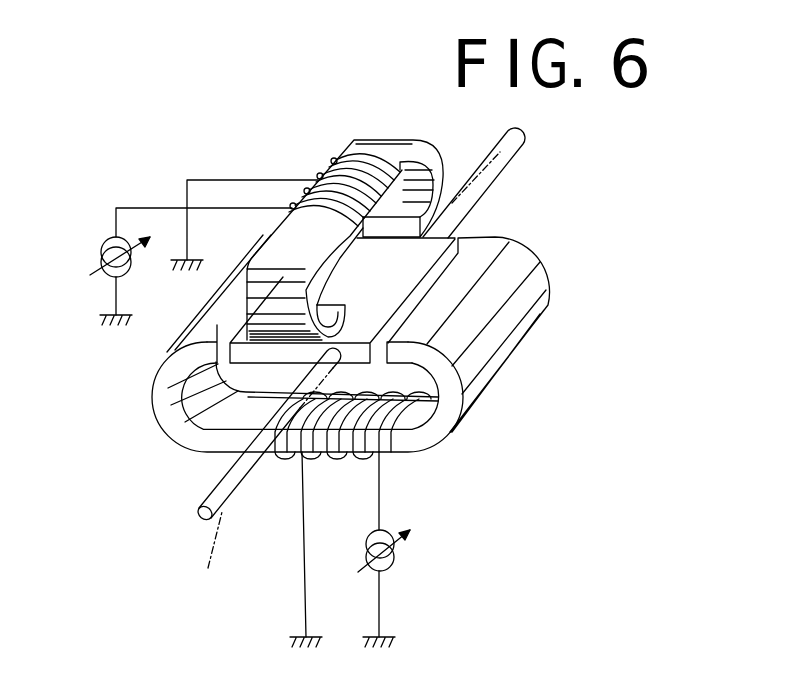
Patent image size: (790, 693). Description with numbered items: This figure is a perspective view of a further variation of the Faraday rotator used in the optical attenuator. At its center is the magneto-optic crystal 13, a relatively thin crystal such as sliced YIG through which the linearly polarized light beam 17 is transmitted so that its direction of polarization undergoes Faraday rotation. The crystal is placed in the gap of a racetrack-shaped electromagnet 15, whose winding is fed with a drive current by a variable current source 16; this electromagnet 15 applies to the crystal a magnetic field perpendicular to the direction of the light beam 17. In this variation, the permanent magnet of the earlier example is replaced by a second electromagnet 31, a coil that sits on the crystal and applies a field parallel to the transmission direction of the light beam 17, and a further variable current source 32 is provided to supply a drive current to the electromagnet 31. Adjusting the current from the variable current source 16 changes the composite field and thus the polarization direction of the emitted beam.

The magneto-optic crystal 13 is at (437, 228).
The electromagnet 15 is at (527, 310).
The variable current source 16 is at (393, 555).
The light beam 17 is at (360, 364).
The electromagnet 31 is at (368, 143).
The variable current source 32 is at (100, 250).